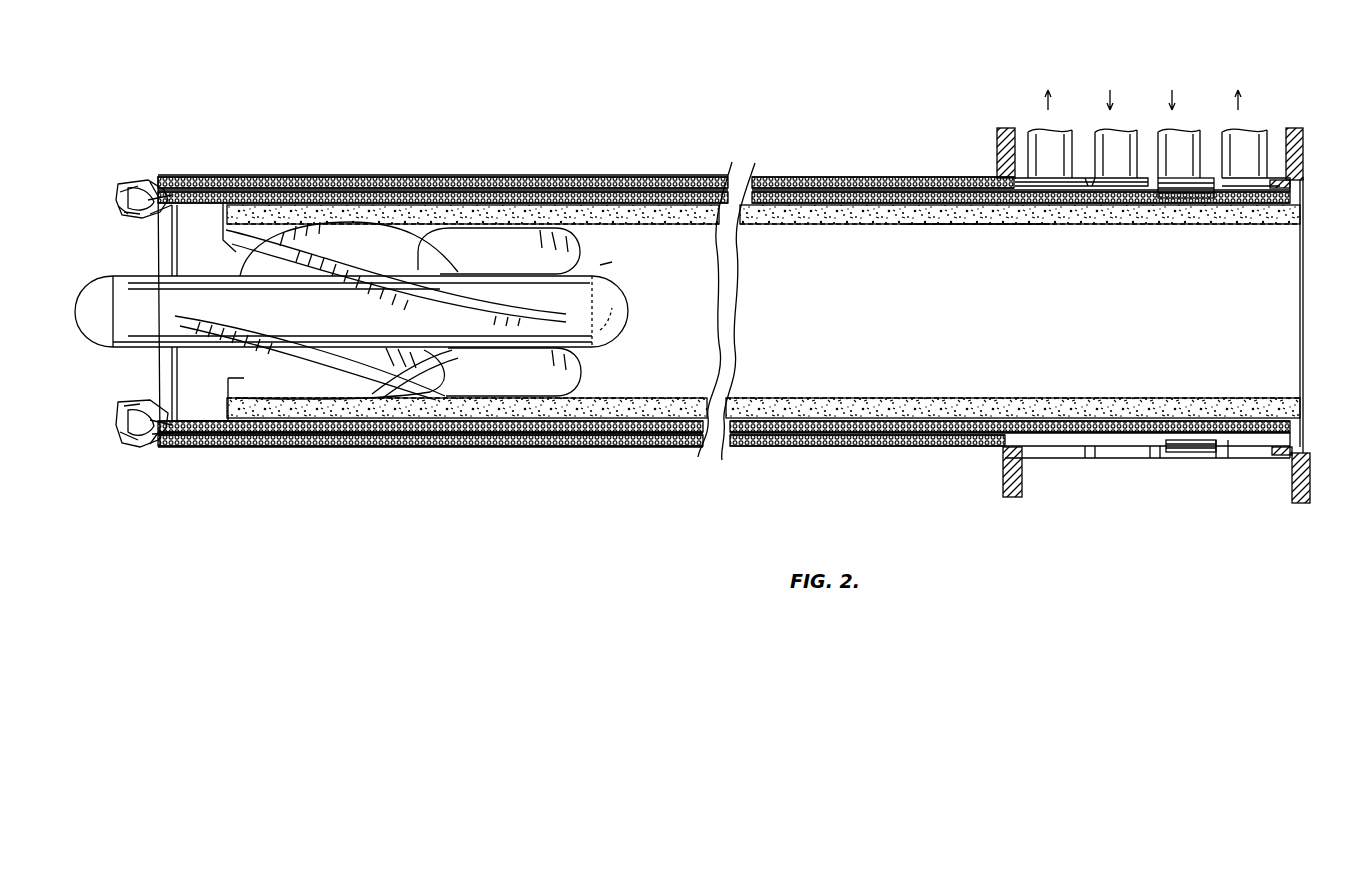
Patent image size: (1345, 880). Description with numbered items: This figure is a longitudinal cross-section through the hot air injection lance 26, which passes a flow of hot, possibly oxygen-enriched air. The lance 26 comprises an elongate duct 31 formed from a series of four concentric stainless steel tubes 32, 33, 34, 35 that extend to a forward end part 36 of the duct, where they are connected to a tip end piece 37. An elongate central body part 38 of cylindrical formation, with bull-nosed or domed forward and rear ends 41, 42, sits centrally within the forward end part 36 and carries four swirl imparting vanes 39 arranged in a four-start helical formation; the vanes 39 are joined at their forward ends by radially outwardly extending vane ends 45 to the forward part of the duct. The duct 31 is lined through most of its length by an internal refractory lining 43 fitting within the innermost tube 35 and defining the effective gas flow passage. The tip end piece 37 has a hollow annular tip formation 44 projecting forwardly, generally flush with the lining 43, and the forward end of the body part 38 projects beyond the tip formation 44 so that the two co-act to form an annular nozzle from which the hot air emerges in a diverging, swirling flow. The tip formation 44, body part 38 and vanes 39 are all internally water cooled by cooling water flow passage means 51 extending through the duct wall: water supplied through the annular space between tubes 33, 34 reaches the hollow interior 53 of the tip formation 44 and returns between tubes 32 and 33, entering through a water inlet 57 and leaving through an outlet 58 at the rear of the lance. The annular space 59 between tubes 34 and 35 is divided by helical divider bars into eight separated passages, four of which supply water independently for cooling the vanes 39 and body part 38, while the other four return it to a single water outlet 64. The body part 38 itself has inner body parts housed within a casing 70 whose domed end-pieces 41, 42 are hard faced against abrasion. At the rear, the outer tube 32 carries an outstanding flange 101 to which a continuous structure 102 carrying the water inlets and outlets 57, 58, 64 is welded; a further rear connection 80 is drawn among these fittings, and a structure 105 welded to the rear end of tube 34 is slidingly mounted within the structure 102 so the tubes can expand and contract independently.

The hot air injection lance 26 is at (772, 172).
The elongate duct 31 is at (526, 173).
The duct tube 32 is at (813, 180).
The duct tube 33 is at (851, 190).
The duct tube 34 is at (886, 197).
The innermost duct tube 35 is at (921, 205).
The forward end part 36 is at (322, 170).
The tip end piece 37 is at (114, 418).
The central body part 38 is at (617, 272).
The swirl imparting vanes 39 is at (378, 311).
The domed forward end 41 is at (100, 282).
The domed rear end 42 is at (614, 302).
The internal refractory lining 43 is at (976, 220).
The tip formation 44 is at (116, 218).
The vane ends 45 is at (196, 215).
The cooling water flow passage means 51 is at (668, 428).
The hollow interior of tip formation 53 is at (131, 198).
The water inlet 57 is at (1116, 142).
The water outlet 58 is at (1058, 140).
The annular space 59 is at (288, 430).
The water outlet 64 is at (1250, 142).
The casing 70 is at (590, 350).
The post 80 is at (1176, 142).
The outstanding flange 101 is at (1002, 128).
The continuous structure 102 is at (1218, 460).
The structure 105 is at (1186, 200).